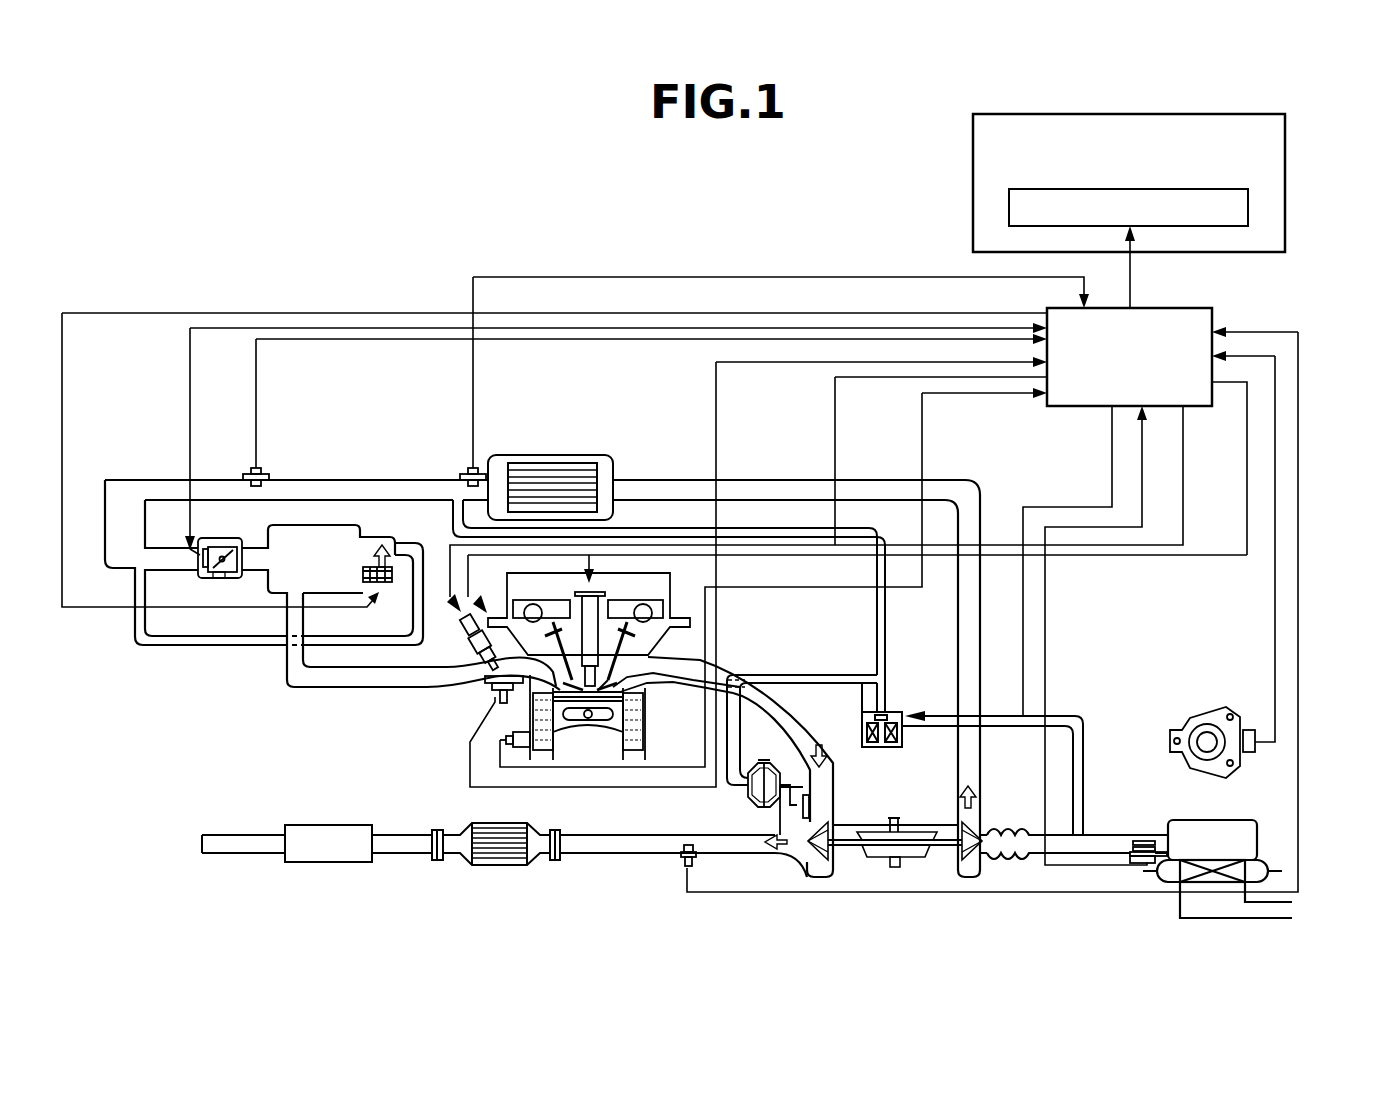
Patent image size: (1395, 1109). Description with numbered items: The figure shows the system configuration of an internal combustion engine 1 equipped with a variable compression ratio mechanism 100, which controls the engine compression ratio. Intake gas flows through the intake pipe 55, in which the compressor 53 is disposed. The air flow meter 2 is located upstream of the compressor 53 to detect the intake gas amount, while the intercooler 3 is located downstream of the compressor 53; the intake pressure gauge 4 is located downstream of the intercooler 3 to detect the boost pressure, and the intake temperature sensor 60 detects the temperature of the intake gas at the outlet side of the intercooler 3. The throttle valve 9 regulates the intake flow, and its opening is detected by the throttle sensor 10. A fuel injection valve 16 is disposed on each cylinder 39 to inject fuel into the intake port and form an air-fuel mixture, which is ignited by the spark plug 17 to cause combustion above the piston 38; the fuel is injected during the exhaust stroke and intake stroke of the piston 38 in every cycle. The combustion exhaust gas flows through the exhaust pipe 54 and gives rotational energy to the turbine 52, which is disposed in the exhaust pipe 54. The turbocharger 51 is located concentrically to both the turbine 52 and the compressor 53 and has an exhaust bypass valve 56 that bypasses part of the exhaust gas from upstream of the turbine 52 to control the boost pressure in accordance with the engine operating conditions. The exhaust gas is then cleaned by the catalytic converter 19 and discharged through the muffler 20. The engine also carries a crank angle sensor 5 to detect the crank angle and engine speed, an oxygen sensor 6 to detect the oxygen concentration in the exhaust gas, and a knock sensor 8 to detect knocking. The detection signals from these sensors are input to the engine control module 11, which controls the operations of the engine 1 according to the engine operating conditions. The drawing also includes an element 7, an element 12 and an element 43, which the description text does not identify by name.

The internal combustion engine 1 is at (655, 715).
The air flow meter 2 is at (1134, 848).
The intercooler 3 is at (549, 455).
The intake pressure gauge 4 is at (257, 468).
The crank angle sensor 5 is at (1207, 742).
The oxygen sensor 6 is at (680, 862).
The intake pressure sensor 7 is at (485, 700).
The knock sensor 8 is at (508, 752).
The throttle valve 9 is at (215, 545).
The throttle sensor 10 is at (219, 578).
The engine control module (ECM) 11 is at (1215, 315).
The EGR valve 12 is at (892, 712).
The fuel injection valve 16 is at (465, 630).
The spark plug 17 is at (650, 663).
The catalytic converter 19 is at (500, 855).
The muffler 20 is at (330, 855).
The piston 38 is at (600, 720).
The cylinder 39 is at (552, 742).
The actuator 43 is at (1250, 207).
The turbocharger (supercharger) 51 is at (909, 816).
The turbine 52 is at (826, 870).
The compressor 53 is at (972, 870).
The exhaust pipe 54 is at (772, 698).
The intake pipe 55 is at (776, 490).
The exhaust bypass valve 56 is at (785, 812).
The intake temperature sensor 60 is at (470, 468).
The variable compression ratio mechanism 100 is at (1287, 142).